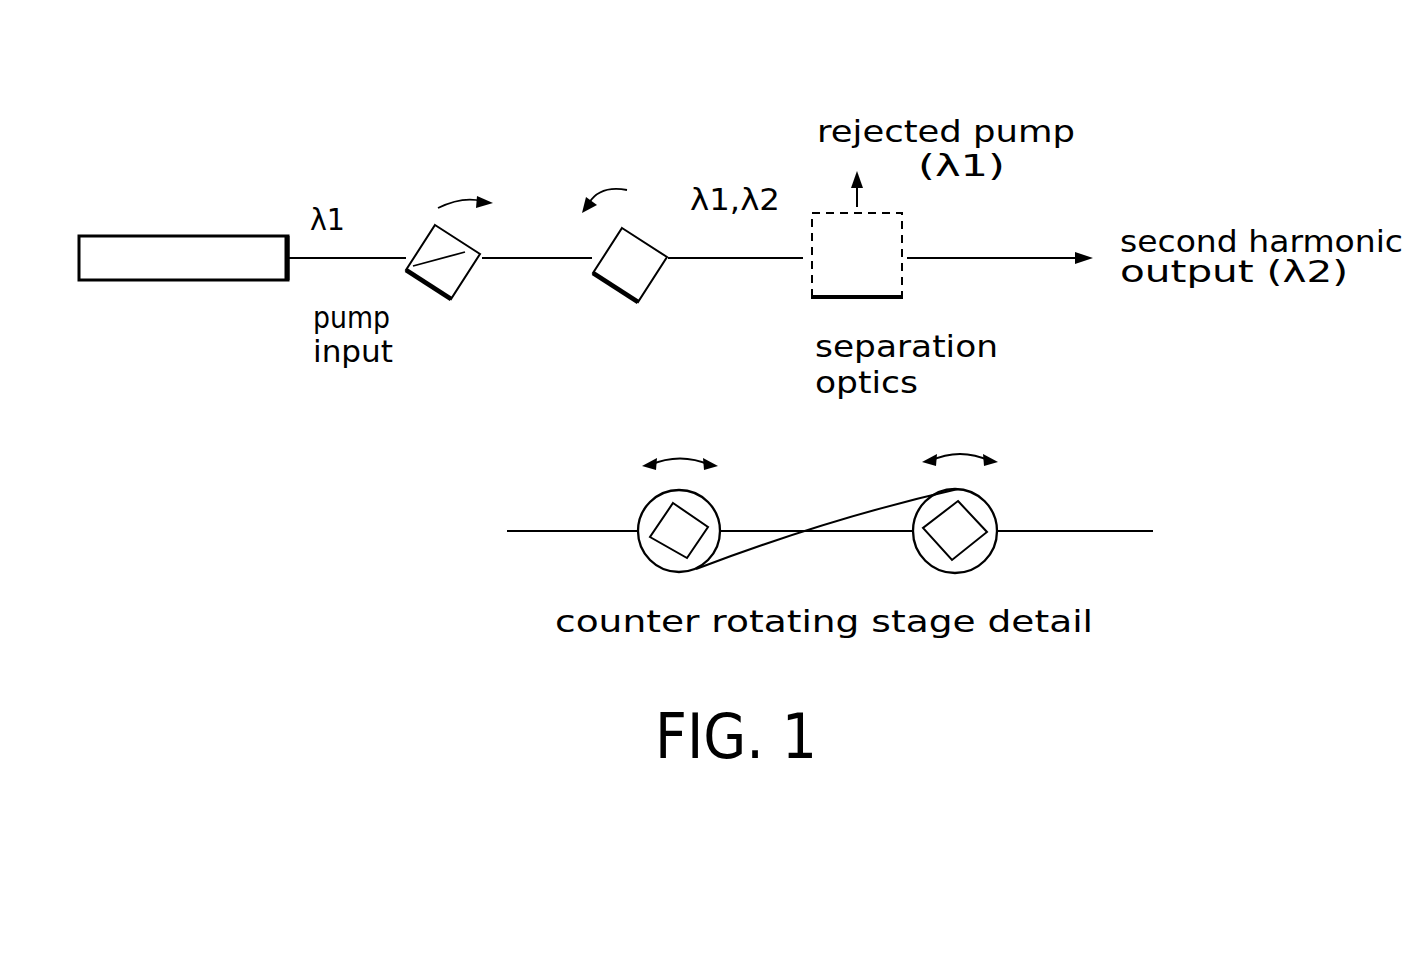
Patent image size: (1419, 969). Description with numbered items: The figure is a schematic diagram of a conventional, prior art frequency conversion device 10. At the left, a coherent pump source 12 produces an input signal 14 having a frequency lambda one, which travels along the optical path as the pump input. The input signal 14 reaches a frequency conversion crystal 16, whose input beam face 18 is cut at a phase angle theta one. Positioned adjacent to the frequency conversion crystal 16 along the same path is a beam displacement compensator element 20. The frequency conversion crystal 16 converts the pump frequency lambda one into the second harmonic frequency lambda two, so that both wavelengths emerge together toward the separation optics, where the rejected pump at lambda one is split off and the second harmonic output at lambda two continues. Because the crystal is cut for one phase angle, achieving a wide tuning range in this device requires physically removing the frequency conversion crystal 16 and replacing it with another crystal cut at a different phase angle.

The frequency conversion device 10 is at (532, 160).
The coherent pump source 12 is at (182, 237).
The input signal 14 is at (332, 258).
The frequency conversion crystal 16 is at (452, 300).
The input beam face 18 is at (430, 221).
The beam displacement compensator element 20 is at (620, 228).